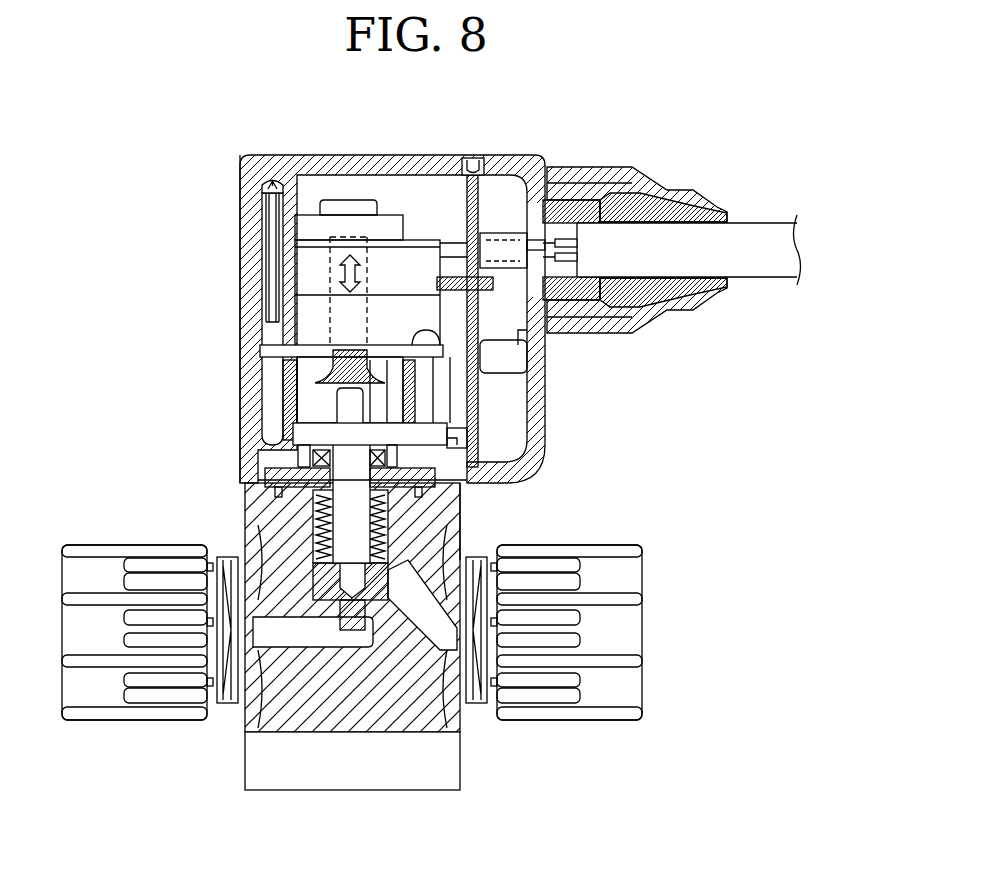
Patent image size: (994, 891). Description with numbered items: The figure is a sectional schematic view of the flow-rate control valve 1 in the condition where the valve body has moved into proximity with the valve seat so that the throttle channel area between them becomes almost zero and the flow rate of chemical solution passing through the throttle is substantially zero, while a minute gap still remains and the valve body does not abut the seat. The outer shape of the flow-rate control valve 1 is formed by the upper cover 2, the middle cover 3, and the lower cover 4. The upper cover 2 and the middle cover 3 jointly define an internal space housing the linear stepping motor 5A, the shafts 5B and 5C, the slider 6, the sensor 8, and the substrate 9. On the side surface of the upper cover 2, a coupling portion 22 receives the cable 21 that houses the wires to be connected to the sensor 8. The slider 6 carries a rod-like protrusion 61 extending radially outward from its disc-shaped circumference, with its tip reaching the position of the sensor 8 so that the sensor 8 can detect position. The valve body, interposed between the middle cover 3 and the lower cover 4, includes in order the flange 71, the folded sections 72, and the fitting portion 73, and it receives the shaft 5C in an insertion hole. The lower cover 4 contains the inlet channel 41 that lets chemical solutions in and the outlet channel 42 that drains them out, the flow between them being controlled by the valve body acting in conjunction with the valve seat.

The flow-rate control valve 1 is at (168, 152).
The upper cover 2 is at (240, 235).
The middle cover 3 is at (545, 397).
The lower cover 4 is at (204, 780).
The linear stepping motor 5A is at (396, 230).
The shaft 5B is at (297, 386).
The shaft 5C is at (302, 465).
The slider 6 is at (297, 443).
The sensor 8 is at (463, 440).
The substrate 9 is at (478, 192).
The cable 21 is at (762, 224).
The coupling portion 22 is at (595, 168).
The inlet channel 41 is at (296, 635).
The outlet channel 42 is at (432, 633).
The protrusion 61 is at (425, 424).
The flange 71 is at (275, 478).
The folded sections 72 is at (442, 527).
The fitting portion 73 is at (320, 578).